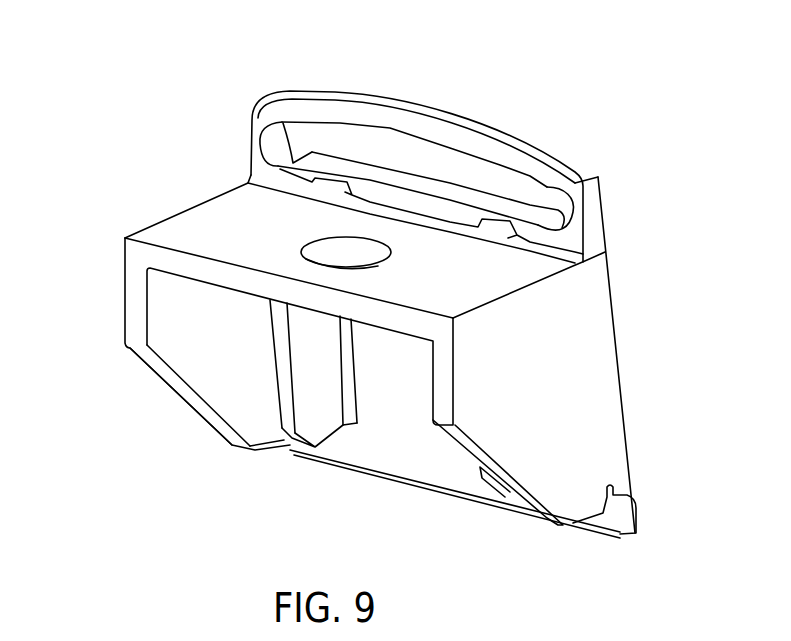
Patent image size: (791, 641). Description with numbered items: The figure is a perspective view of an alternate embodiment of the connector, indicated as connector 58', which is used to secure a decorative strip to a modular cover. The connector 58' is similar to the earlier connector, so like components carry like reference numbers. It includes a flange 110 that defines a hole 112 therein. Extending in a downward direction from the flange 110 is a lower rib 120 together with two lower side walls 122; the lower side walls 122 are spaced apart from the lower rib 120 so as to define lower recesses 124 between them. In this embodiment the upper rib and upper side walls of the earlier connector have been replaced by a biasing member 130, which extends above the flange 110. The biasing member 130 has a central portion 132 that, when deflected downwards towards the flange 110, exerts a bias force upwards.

The connector 58' is at (424, 307).
The flange 110 is at (178, 228).
The hole 112 is at (335, 250).
The lower rib 120 is at (393, 480).
The lower side walls 122 is at (182, 394).
The lower recesses 124 is at (292, 452).
The biasing member 130 is at (594, 205).
The central portion 132 is at (455, 118).